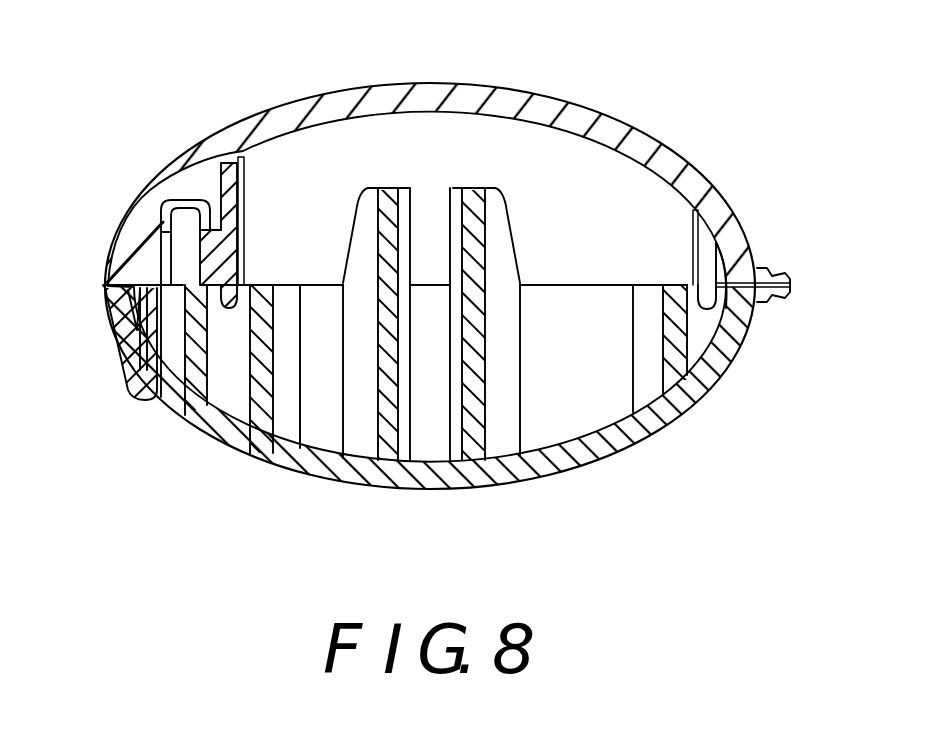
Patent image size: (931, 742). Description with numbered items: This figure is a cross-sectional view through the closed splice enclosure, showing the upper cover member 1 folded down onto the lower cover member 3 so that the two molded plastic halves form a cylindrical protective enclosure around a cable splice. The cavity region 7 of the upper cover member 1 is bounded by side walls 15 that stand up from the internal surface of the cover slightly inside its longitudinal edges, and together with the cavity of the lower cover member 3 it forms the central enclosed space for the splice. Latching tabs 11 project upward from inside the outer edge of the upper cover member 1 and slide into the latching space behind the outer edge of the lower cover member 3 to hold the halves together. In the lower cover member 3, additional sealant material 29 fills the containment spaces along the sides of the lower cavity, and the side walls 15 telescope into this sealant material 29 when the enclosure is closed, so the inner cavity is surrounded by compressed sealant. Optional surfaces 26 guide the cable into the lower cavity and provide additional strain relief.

The upper cover member 1 is at (344, 69).
The lower cover member 3 is at (268, 488).
The cavity region 7 is at (592, 163).
The latching tab 11 is at (133, 397).
The side wall 15 is at (230, 193).
The cable guiding surface 26 is at (360, 425).
The sealant material 29 is at (225, 385).